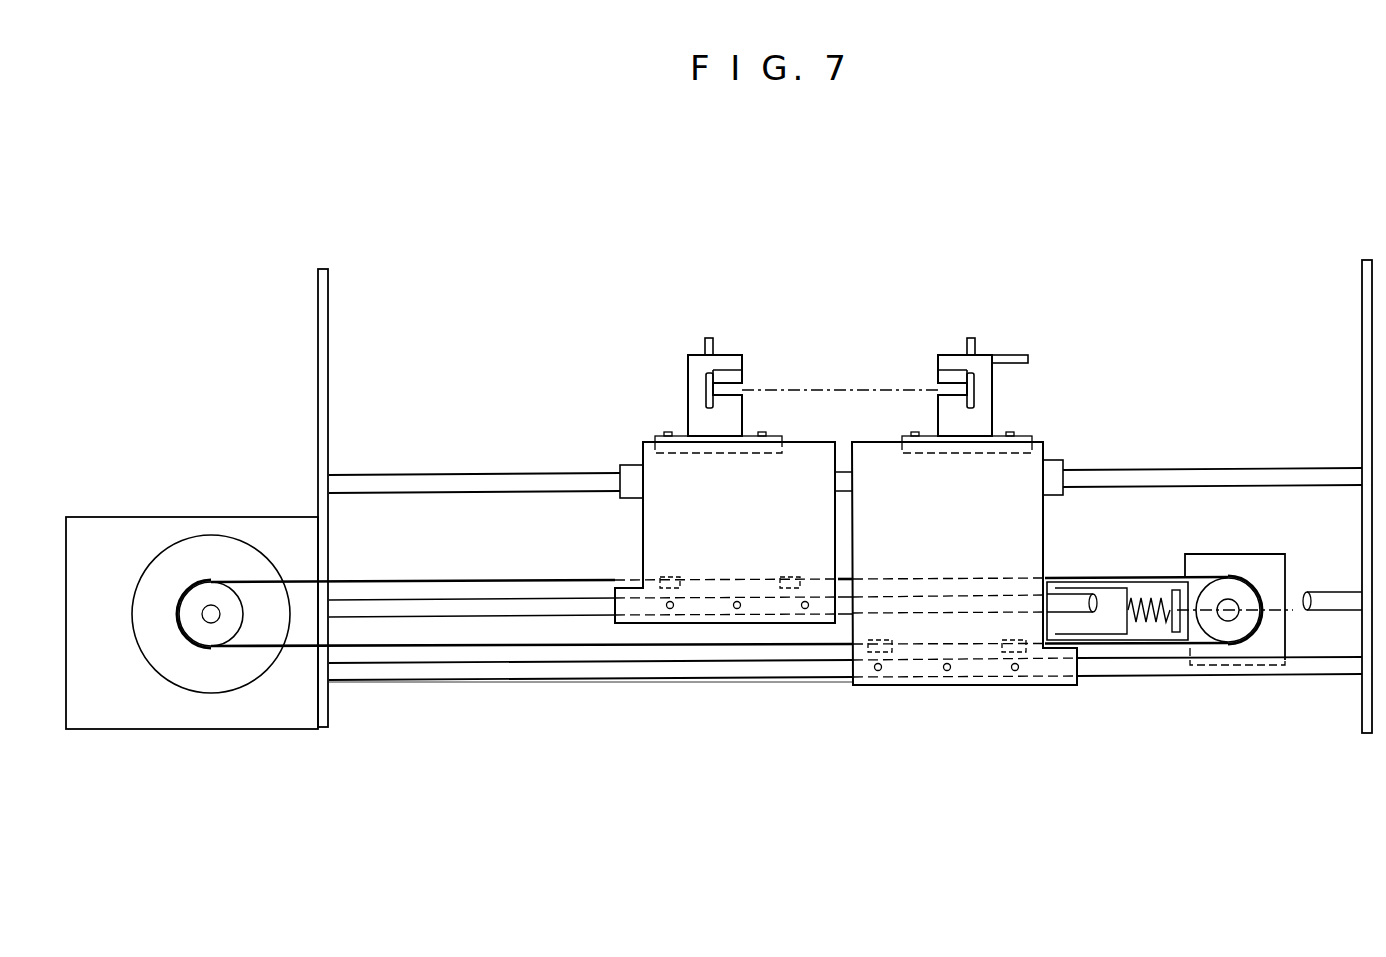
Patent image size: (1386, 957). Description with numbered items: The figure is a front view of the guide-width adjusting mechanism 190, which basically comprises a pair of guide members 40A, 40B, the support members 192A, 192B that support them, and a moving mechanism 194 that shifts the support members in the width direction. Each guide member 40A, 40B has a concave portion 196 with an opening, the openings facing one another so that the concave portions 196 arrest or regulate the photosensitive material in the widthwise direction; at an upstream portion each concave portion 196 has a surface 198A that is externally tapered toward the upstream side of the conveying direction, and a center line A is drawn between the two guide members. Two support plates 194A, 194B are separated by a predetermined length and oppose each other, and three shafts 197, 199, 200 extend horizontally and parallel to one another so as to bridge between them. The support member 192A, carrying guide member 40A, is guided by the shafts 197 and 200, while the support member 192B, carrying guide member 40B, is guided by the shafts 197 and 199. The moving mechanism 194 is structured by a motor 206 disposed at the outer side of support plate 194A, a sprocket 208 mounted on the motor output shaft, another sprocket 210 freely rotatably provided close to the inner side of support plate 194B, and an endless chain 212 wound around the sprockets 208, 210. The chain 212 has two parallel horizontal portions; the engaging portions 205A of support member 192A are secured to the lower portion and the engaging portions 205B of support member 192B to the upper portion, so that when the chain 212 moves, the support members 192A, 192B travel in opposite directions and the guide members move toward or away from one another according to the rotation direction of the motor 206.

The guide-width adjusting mechanism 190 is at (845, 297).
The center line A is at (862, 390).
The moving mechanism 194 is at (352, 684).
The support plate 194A is at (328, 330).
The support plate 194B is at (1362, 303).
The motor 206 is at (155, 531).
The sprocket 208 is at (215, 628).
The sprocket 210 is at (1237, 626).
The chain 212 is at (442, 582).
The shaft 197 is at (500, 483).
The shaft 199 is at (478, 612).
The shaft 200 is at (597, 672).
The support member 192A is at (1025, 510).
The support member 192B is at (657, 535).
The engaging portions 205A is at (1013, 638).
The engaging portions 205B is at (672, 577).
The guide member 40A is at (982, 332).
The guide member 40B is at (697, 338).
The surface 198A is at (712, 390).
The concave portion 196 is at (820, 426).